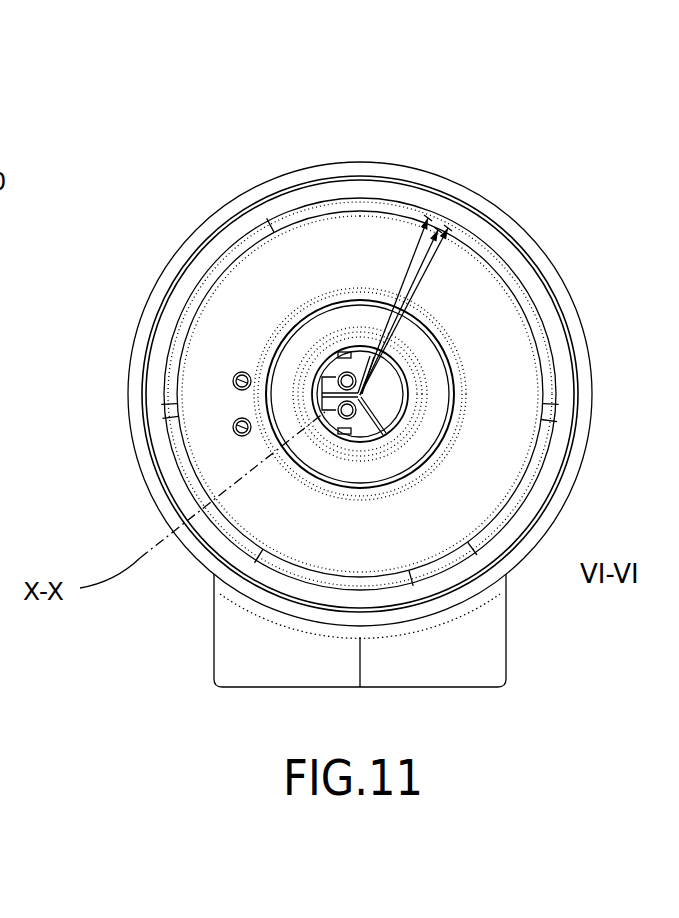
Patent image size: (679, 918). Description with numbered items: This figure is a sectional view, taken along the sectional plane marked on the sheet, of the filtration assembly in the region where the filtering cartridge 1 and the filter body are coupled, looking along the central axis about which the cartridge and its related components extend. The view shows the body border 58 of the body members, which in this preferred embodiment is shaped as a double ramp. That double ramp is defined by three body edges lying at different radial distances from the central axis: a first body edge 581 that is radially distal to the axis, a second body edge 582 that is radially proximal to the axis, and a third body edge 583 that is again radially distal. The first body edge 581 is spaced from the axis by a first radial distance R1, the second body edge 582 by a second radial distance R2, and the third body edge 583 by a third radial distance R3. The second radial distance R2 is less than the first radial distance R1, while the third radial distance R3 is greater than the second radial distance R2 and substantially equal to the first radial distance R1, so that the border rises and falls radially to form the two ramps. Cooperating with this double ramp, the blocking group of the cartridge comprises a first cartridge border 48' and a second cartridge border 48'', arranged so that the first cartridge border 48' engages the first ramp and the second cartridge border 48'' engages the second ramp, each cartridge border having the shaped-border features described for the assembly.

The filtering cartridge 1 is at (135, 103).
The first cartridge border 48' is at (406, 304).
The second cartridge border 48'' is at (260, 310).
The body border 58 is at (462, 223).
The first body edge 581 is at (428, 218).
The second body edge 582 is at (438, 230).
The third body edge 583 is at (448, 228).
The first radial distance R1 is at (400, 290).
The second radial distance R2 is at (430, 262).
The third radial distance R3 is at (434, 257).